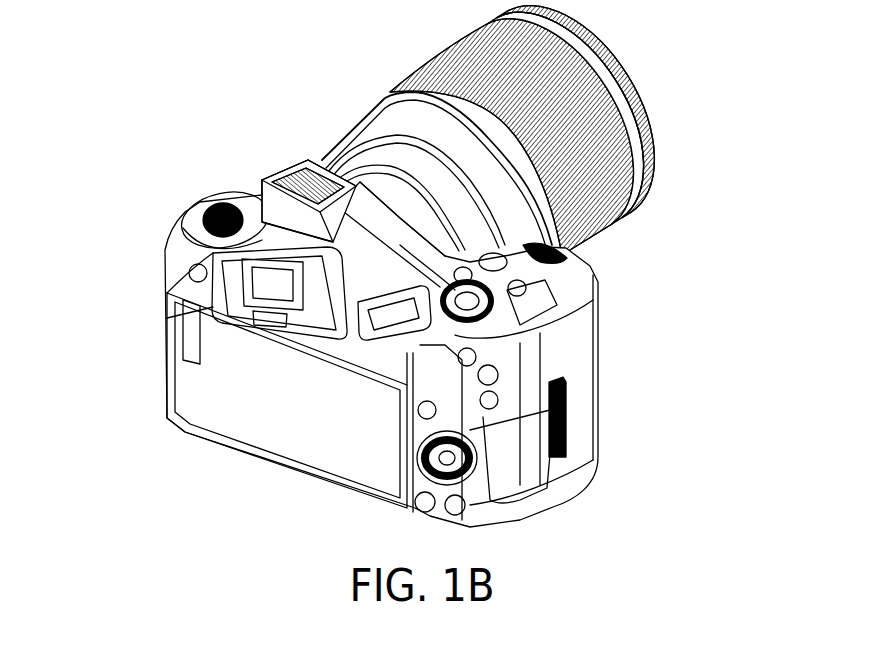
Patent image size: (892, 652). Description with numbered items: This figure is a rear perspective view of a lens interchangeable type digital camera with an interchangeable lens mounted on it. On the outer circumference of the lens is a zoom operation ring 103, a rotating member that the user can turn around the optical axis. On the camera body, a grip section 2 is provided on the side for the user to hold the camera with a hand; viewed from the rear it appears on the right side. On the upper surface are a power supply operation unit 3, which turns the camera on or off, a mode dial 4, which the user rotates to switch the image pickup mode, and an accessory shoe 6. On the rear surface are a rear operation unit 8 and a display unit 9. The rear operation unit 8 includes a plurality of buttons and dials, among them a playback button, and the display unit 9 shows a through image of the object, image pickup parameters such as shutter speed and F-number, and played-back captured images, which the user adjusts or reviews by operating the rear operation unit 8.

The zoom operation ring 103 is at (420, 64).
The grip section 2 is at (597, 385).
The power supply operation unit 3 is at (193, 200).
The mode dial 4 is at (593, 307).
The accessory shoe 6 is at (283, 172).
The rear operation unit 8 is at (573, 423).
The display unit 9 is at (252, 427).